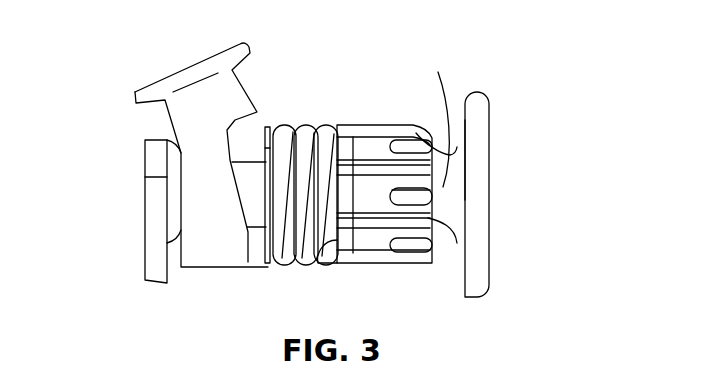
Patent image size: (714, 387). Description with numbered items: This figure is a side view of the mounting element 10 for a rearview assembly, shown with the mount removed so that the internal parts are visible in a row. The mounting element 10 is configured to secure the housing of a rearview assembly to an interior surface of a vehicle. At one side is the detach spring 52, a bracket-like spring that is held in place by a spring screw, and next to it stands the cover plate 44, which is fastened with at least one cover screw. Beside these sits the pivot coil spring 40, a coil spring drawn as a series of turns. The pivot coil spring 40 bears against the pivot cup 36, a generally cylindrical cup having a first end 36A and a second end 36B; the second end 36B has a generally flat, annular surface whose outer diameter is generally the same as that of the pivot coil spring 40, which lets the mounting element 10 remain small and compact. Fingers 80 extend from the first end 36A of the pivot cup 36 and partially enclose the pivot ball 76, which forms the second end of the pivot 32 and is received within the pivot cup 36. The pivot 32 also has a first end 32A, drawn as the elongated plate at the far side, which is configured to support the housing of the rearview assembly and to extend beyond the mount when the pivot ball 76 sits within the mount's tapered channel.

The mounting element 10 is at (130, 22).
The pivot 32 is at (488, 98).
The first end of pivot 32A is at (490, 153).
The pivot cup 36 is at (357, 123).
The first end of pivot cup 36A is at (457, 243).
The second end of pivot cup 36B is at (332, 235).
The pivot coil spring 40 is at (305, 127).
The cover plate 44 is at (147, 137).
The detach spring 52 is at (147, 88).
The pivot ball 76 is at (408, 197).
The fingers 80 is at (416, 133).